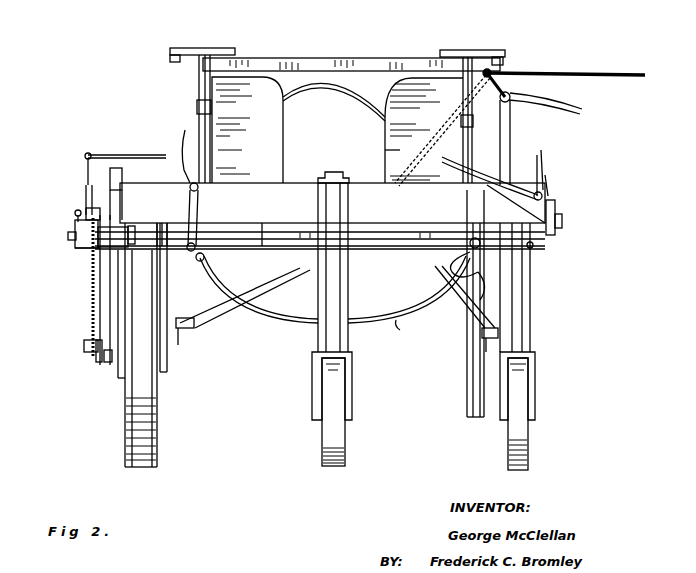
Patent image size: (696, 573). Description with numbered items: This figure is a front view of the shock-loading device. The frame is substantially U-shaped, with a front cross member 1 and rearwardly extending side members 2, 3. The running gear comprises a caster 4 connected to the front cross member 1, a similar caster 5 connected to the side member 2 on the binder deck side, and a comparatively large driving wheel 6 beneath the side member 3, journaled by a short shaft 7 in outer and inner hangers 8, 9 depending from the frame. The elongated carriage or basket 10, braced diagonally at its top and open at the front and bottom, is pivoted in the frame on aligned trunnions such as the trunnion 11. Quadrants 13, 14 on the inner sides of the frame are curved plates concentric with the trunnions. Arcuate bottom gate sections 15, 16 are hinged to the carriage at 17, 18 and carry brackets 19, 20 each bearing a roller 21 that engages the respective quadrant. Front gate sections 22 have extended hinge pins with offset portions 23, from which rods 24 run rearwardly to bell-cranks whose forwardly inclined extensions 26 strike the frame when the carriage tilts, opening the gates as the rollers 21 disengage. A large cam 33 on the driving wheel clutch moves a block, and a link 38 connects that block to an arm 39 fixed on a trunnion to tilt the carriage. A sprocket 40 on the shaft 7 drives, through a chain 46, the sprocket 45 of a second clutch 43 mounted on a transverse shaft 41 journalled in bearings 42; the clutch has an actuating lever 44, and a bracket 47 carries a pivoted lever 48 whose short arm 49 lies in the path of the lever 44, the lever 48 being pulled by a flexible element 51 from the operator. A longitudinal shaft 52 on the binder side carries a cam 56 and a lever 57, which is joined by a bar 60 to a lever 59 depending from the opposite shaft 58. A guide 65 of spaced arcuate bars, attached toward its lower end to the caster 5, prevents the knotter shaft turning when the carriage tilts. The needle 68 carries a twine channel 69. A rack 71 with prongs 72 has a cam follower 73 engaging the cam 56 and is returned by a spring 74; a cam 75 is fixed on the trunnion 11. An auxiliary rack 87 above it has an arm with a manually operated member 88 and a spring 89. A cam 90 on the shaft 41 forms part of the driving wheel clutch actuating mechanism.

The front cross member 1 is at (280, 222).
The side member 2 is at (548, 187).
The side member 3 is at (124, 180).
The caster 4 is at (322, 455).
The caster 5 is at (535, 420).
The driving wheel 6 is at (125, 445).
The short shaft 7 is at (84, 346).
The outer hanger 8 is at (106, 362).
The inner hanger 9 is at (168, 362).
The carriage or basket 10 is at (380, 61).
The trunnion 11 is at (563, 224).
The quadrant 13 is at (480, 345).
The quadrant 14 is at (176, 336).
The gate section 15 is at (360, 324).
The gate section 16 is at (304, 324).
The hinge 17 is at (480, 272).
The hinge 18 is at (198, 262).
The bracket 19 is at (406, 328).
The bracket 20 is at (248, 318).
The roller 21 is at (194, 324).
The gate section 22 is at (218, 90).
The offset portion 23 is at (212, 48).
The rod 24 is at (235, 50).
The forwardly inclined extension 26 is at (170, 56).
The cam 33 is at (120, 380).
The link 38 is at (86, 190).
The arm 39 is at (112, 168).
The sprocket 40 is at (96, 355).
The shaft 41 is at (68, 238).
The bearing 42 is at (476, 238).
The second clutch 43 is at (82, 248).
The actuating lever 44 is at (78, 222).
The sprocket 45 is at (95, 250).
The chain 46 is at (90, 312).
The bracket 47 is at (86, 212).
The lever 48 is at (85, 156).
The short normal arm 49 is at (76, 213).
The flexible element 51 is at (138, 155).
The shaft 52 is at (470, 240).
The cam 56 is at (488, 288).
The lever 57 is at (534, 246).
The shaft 58 is at (185, 145).
The lever 59 is at (193, 225).
The bar 60 is at (308, 250).
The guide 65 is at (466, 410).
The needle 68 is at (300, 93).
The channel 69 is at (370, 103).
The rack 71 is at (548, 180).
The prongs 72 is at (545, 160).
The cam follower 73 is at (478, 167).
The spring 74 is at (520, 175).
The cam 75 is at (556, 214).
The auxiliary rack 87 is at (510, 97).
The manually operated member 88 is at (610, 75).
The spring 89 is at (400, 150).
The cam 90 is at (134, 227).